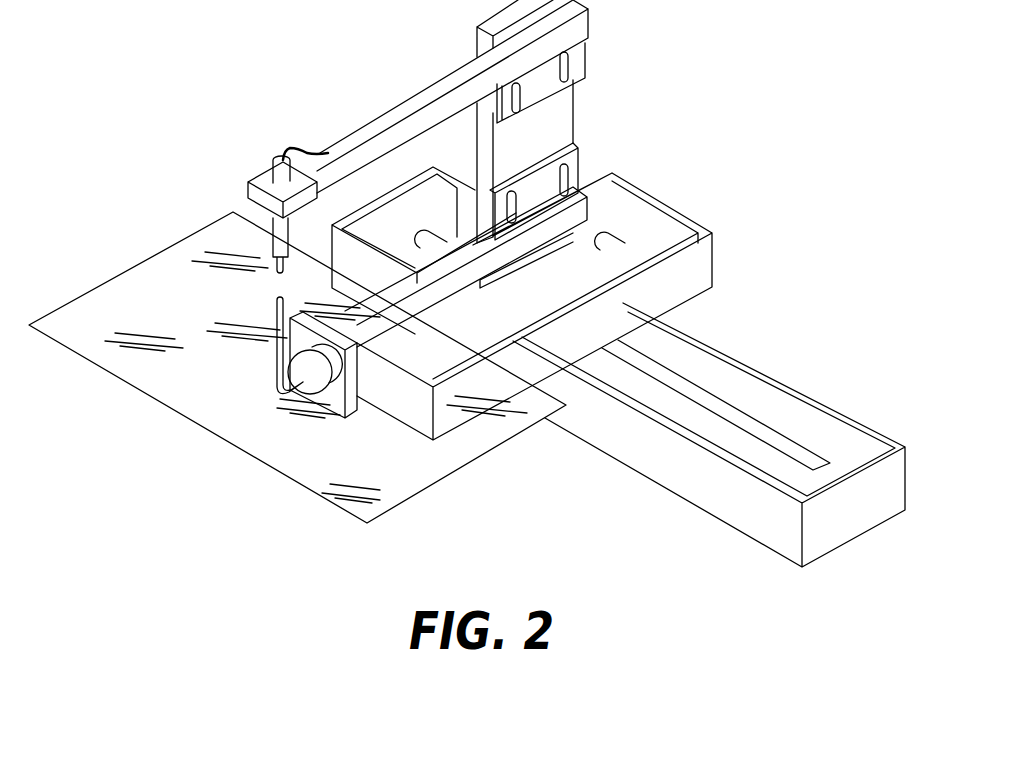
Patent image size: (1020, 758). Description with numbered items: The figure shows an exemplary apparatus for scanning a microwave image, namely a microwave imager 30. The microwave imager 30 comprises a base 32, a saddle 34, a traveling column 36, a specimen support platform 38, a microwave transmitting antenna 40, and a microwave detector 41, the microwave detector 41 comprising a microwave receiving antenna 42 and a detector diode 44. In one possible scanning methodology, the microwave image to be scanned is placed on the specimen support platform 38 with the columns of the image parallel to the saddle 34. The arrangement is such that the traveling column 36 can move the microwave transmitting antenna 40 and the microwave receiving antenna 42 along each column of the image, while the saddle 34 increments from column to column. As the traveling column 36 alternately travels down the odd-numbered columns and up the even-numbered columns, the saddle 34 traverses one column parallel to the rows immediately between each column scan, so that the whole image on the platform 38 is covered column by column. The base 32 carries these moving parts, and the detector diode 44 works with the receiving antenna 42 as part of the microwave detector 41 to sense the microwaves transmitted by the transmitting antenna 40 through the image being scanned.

The microwave imager 30 is at (467, 283).
The base 32 is at (809, 367).
The saddle 34 is at (733, 248).
The traveling column 36 is at (596, 103).
The specimen support platform 38 is at (220, 467).
The microwave transmitting antenna 40 is at (277, 316).
The microwave detector 41 is at (176, 275).
The microwave receiving antenna 42 is at (300, 278).
The detector diode 44 is at (248, 186).